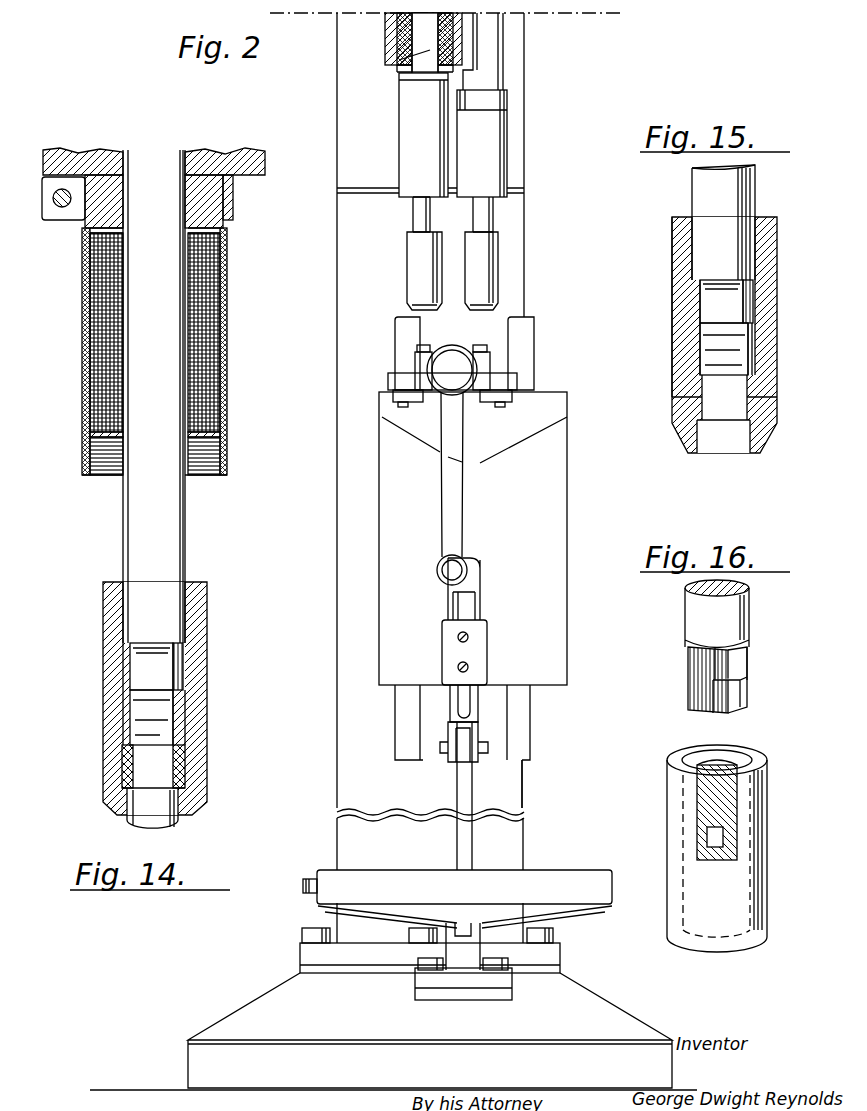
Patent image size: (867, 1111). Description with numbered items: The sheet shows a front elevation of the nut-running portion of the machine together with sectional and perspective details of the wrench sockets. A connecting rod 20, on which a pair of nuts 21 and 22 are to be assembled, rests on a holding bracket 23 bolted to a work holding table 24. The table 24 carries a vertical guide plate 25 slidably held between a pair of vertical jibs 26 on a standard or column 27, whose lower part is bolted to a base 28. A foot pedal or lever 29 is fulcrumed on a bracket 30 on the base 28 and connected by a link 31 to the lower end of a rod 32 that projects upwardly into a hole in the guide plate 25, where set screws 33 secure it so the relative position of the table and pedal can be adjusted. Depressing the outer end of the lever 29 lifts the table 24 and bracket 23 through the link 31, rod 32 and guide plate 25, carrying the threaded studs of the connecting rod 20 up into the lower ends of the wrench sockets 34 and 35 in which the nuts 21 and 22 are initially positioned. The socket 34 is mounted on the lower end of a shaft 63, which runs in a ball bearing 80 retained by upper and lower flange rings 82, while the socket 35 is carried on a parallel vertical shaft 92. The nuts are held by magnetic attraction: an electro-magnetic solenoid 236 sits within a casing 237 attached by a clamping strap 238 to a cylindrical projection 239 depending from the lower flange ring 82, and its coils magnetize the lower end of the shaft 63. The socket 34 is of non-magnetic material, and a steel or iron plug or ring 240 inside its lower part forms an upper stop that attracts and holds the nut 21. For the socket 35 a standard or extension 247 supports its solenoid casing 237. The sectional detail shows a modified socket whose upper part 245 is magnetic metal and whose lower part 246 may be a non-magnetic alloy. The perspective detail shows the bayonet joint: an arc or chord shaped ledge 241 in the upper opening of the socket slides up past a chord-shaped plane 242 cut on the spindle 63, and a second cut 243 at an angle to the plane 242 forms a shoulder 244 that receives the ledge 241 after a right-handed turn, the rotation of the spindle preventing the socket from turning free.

In FIG. 2, the connecting rod 20 is at (441, 475).
In FIG. 2, the nut 21 is at (417, 350).
In FIG. 14, the nut 21 is at (128, 818).
In FIG. 2, the nut 22 is at (488, 351).
In FIG. 2, the holding bracket 23 is at (392, 385).
In FIG. 2, the work holding table 24 is at (474, 440).
In FIG. 2, the vertical guide plate 25 is at (473, 538).
In FIG. 2, the vertical jibs 26 is at (395, 730).
In FIG. 2, the standard or column 27 is at (508, 785).
In FIG. 2, the base 28 is at (430, 1030).
In FIG. 2, the foot pedal or lever 29 is at (457, 920).
In FIG. 2, the bracket 30 is at (430, 964).
In FIG. 2, the link 31 is at (458, 840).
In FIG. 2, the rod 32 is at (470, 710).
In FIG. 2, the set screws 33 is at (470, 665).
In FIG. 2, the nut socket or wrench 34 is at (415, 270).
In FIG. 14, the nut socket or wrench 34 is at (200, 756).
In FIG. 15, the nut socket or wrench 34 is at (672, 366).
In FIG. 16, the nut socket or wrench 34 is at (667, 800).
In FIG. 2, the nut socket or wrench 35 is at (490, 266).
In FIG. 2, the shaft 63 is at (430, 60).
In FIG. 14, the shaft 63 is at (154, 396).
In FIG. 15, the shaft 63 is at (768, 177).
In FIG. 16, the shaft 63 is at (685, 625).
In FIG. 2, the ball bearing 80 is at (388, 32).
In FIG. 2, the flange rings 82 is at (405, 78).
In FIG. 14, the flange rings 82 is at (60, 152).
In FIG. 2, the vertical shaft 92 is at (493, 210).
In FIG. 14, the electro-magnetic solenoid 236 is at (210, 340).
In FIG. 2, the casing 237 is at (410, 152).
In FIG. 14, the casing 237 is at (225, 282).
In FIG. 14, the clamping strap 238 is at (58, 220).
In FIG. 14, the cylindrical projection 239 is at (88, 233).
In FIG. 14, the steel or iron plug or ring 240 is at (125, 774).
In FIG. 14, the arc or chord shaped ledge 241 is at (200, 648).
In FIG. 15, the arc or chord shaped ledge 241 is at (750, 311).
In FIG. 16, the arc or chord shaped ledge 241 is at (700, 760).
In FIG. 14, the plane 242 is at (135, 718).
In FIG. 15, the plane 242 is at (726, 349).
In FIG. 16, the plane 242 is at (690, 685).
In FIG. 14, the second cut 243 is at (165, 652).
In FIG. 15, the second cut 243 is at (720, 300).
In FIG. 16, the second cut 243 is at (742, 660).
In FIG. 16, the shoulder 244 is at (747, 688).
In FIG. 15, the upper part of socket 245 is at (672, 300).
In FIG. 15, the lower part of socket 246 is at (676, 430).
In FIG. 2, the standard or extension 247 is at (498, 70).